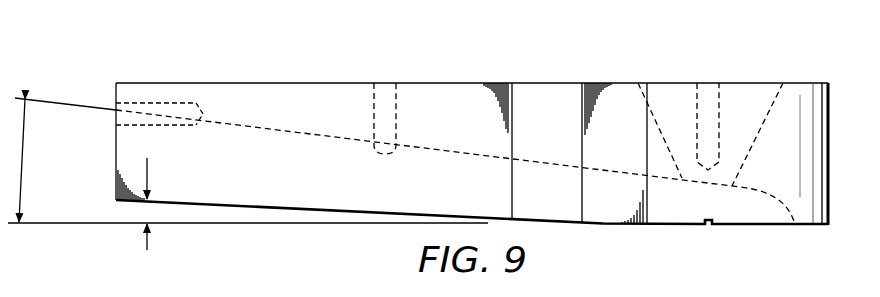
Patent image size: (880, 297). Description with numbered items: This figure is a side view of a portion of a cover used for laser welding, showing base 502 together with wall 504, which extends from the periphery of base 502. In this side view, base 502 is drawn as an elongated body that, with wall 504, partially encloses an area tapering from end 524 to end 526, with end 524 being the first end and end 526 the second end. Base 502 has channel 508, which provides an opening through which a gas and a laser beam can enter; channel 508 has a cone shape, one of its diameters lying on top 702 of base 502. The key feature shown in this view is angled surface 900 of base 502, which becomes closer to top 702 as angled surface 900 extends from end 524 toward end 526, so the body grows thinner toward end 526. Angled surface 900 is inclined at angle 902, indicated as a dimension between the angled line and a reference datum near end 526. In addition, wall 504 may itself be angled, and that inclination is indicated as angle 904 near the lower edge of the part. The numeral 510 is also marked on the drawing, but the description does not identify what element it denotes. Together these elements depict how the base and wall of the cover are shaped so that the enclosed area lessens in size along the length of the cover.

The base 502 is at (281, 82).
The wall 504 is at (316, 193).
The channel 508 is at (768, 110).
The front edge 510 is at (116, 160).
The end 524 is at (828, 225).
The end 526 is at (116, 96).
The surface 702 is at (548, 83).
The angled surface 900 is at (278, 132).
The angle 902 is at (22, 150).
The angle 904 is at (148, 169).